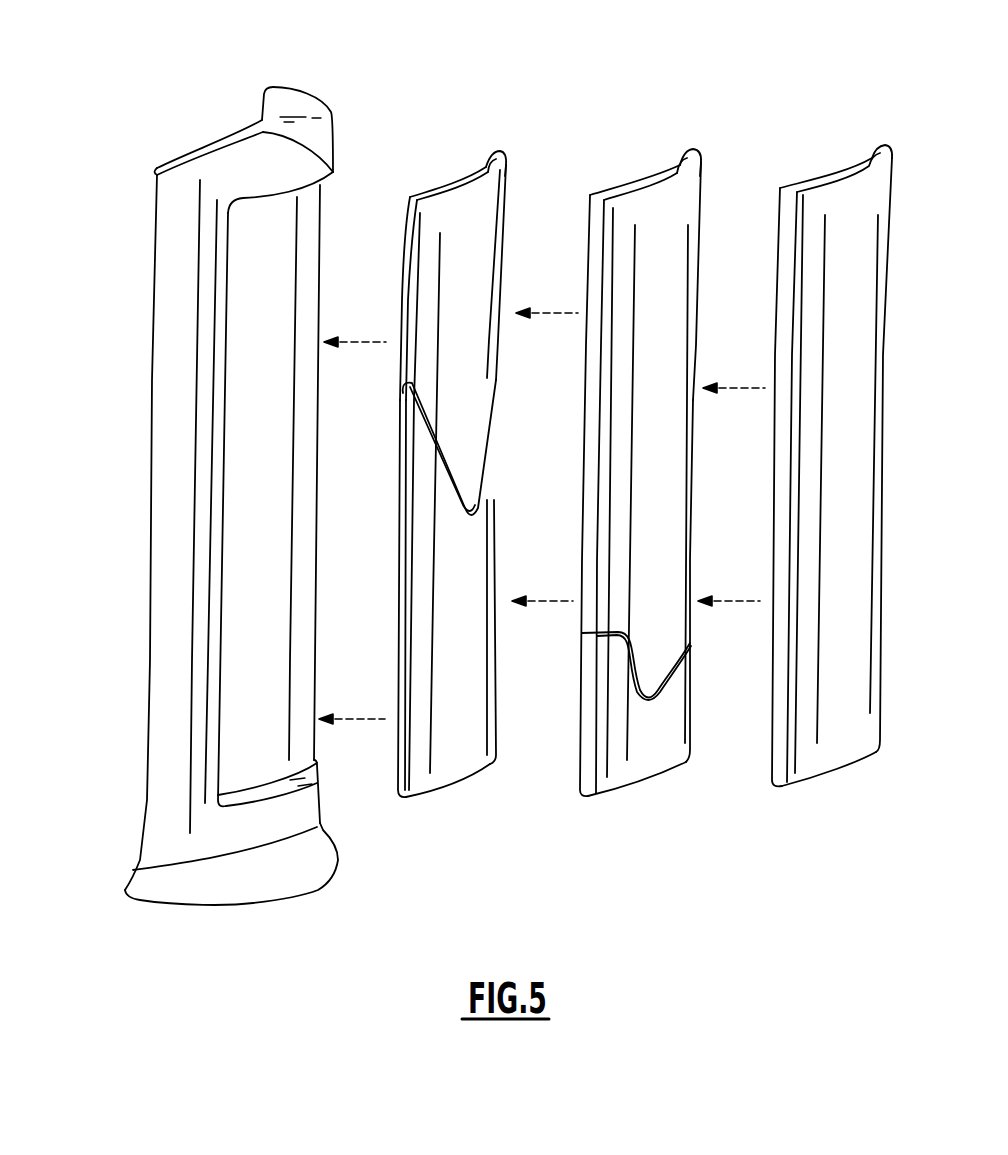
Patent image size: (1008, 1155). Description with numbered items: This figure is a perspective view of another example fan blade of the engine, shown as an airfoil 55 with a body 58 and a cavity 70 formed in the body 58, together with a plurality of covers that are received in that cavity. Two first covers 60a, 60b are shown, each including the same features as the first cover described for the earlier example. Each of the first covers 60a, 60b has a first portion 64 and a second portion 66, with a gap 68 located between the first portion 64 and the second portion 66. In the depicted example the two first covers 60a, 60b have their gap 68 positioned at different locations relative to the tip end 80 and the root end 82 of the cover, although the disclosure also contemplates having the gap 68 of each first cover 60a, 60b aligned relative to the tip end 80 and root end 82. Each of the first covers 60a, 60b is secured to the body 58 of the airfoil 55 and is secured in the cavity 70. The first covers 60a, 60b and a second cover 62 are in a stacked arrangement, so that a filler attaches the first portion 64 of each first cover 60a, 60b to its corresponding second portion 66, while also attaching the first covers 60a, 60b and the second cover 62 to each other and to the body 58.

The airfoil 55 is at (194, 496).
The body 58 is at (231, 496).
The first cover 60a is at (457, 190).
The first cover 60b is at (623, 190).
The second cover 62 is at (821, 178).
The first portion 64 is at (403, 302).
The second portion 66 is at (398, 632).
The gap 68 is at (403, 383).
The cavity 70 is at (250, 737).
The tip end 80 is at (421, 194).
The root end 82 is at (476, 794).